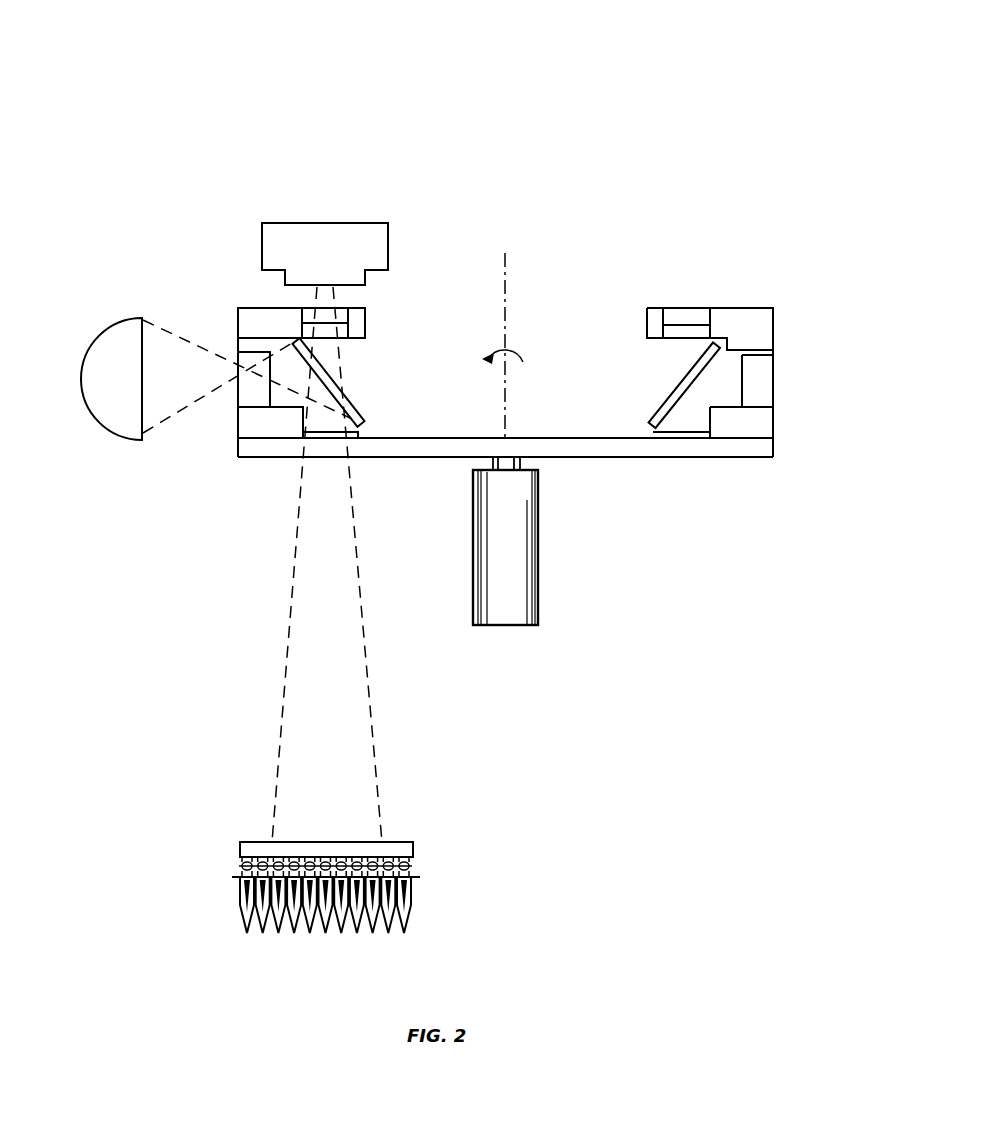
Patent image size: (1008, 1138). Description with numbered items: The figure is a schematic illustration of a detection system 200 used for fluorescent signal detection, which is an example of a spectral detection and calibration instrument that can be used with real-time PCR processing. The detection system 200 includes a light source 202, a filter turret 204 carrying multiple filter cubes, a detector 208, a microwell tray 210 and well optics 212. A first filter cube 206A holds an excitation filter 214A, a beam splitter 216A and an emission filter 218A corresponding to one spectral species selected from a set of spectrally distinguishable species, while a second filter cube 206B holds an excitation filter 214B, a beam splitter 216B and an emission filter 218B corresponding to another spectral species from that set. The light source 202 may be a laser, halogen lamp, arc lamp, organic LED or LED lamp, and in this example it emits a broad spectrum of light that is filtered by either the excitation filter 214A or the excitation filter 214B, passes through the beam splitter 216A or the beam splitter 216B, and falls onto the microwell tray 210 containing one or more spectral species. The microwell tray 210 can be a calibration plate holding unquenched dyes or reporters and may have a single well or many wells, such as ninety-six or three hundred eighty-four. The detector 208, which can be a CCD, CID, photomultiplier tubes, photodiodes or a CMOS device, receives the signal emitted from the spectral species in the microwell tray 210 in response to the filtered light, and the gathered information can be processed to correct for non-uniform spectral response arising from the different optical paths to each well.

The detection system 200 is at (262, 62).
The light source 202 is at (142, 317).
The filter turret 204 is at (555, 292).
The first filter cube 206A is at (230, 300).
The second filter cube 206B is at (782, 298).
The detector 208 is at (300, 223).
The microwell tray 210 is at (235, 876).
The well optics 212 is at (416, 838).
The excitation filter 214A is at (238, 407).
The excitation filter 214B is at (775, 383).
The beam splitter 216A is at (355, 408).
The beam splitter 216B is at (655, 415).
The emission filter 218A is at (344, 326).
The emission filter 218B is at (680, 326).